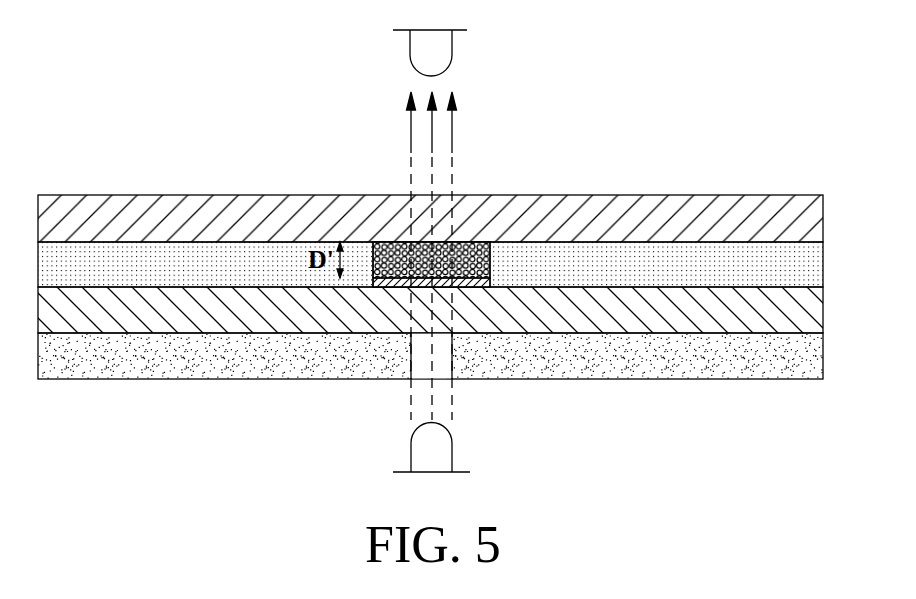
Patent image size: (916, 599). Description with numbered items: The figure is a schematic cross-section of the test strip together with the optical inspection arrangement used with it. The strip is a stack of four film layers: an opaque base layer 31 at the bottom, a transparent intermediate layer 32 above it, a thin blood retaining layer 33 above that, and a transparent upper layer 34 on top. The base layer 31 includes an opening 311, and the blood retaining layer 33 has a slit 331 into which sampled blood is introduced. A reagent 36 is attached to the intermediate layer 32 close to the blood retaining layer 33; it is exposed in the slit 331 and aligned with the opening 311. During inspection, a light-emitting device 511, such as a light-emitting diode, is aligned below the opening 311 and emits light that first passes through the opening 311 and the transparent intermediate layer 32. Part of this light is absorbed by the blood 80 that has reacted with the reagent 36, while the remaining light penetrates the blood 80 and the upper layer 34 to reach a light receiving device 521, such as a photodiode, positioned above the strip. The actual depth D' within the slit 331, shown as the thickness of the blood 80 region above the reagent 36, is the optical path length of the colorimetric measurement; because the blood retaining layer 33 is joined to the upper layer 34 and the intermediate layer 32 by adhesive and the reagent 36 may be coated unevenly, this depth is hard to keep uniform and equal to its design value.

The upper layer 34 is at (808, 220).
The blood retaining layer 33 is at (808, 263).
The intermediate layer 32 is at (808, 310).
The base layer 31 is at (808, 353).
The opening 311 is at (410, 357).
The slit 331 is at (490, 266).
The blood 80 is at (468, 246).
The reagent 36 is at (392, 280).
The light receiving device 521 is at (453, 42).
The light-emitting device 511 is at (452, 452).